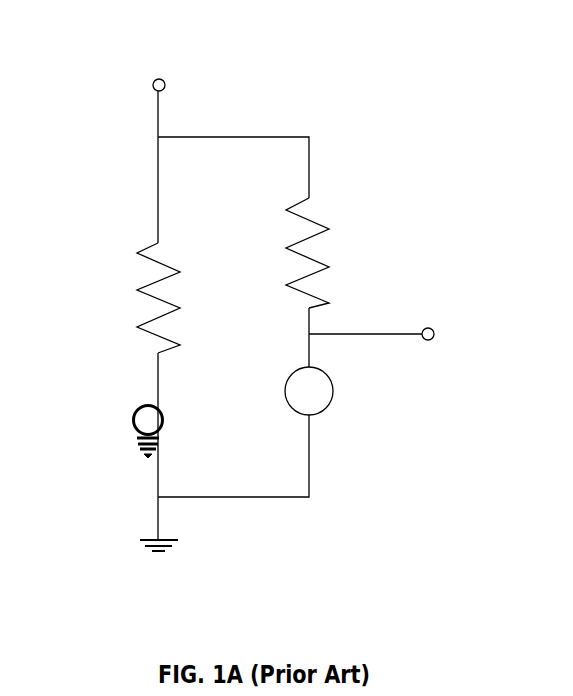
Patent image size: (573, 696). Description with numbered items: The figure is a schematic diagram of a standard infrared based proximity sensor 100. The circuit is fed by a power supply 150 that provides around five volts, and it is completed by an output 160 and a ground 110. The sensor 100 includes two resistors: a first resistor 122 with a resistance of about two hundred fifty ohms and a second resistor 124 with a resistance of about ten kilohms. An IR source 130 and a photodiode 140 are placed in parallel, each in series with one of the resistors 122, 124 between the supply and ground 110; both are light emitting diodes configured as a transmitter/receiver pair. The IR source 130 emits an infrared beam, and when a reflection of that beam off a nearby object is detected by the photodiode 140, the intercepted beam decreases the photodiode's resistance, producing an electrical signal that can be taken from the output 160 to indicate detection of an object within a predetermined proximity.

The infrared based proximity sensor 100 is at (347, 48).
The ground 110 is at (135, 538).
The first resistor 122 is at (127, 278).
The second resistor 124 is at (322, 213).
The IR source 130 is at (142, 405).
The photodiode 140 is at (342, 387).
The power supply 150 is at (152, 78).
The output 160 is at (438, 315).